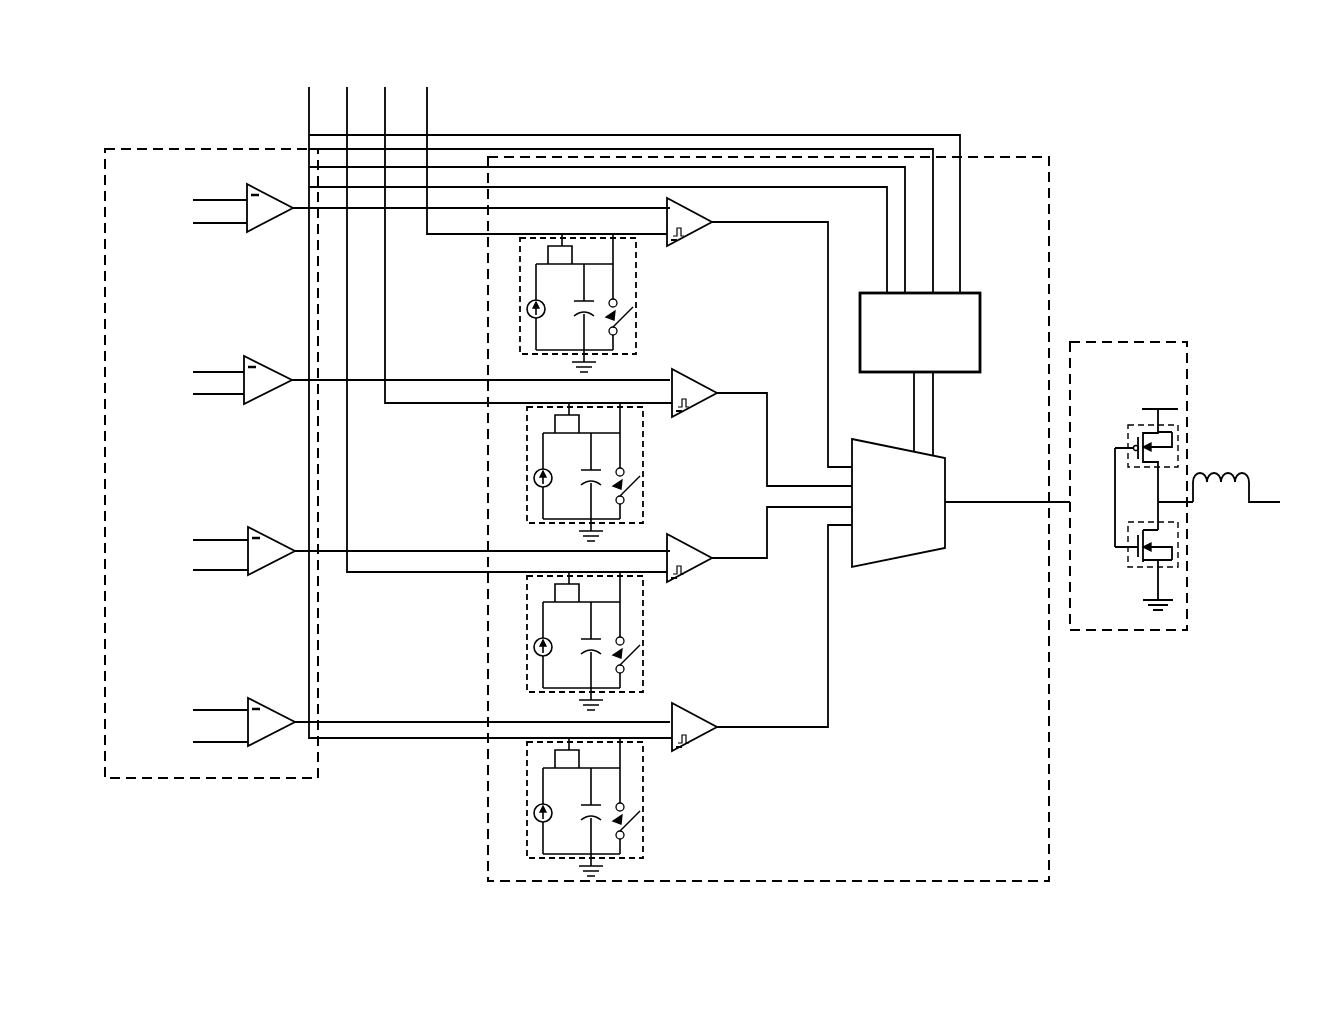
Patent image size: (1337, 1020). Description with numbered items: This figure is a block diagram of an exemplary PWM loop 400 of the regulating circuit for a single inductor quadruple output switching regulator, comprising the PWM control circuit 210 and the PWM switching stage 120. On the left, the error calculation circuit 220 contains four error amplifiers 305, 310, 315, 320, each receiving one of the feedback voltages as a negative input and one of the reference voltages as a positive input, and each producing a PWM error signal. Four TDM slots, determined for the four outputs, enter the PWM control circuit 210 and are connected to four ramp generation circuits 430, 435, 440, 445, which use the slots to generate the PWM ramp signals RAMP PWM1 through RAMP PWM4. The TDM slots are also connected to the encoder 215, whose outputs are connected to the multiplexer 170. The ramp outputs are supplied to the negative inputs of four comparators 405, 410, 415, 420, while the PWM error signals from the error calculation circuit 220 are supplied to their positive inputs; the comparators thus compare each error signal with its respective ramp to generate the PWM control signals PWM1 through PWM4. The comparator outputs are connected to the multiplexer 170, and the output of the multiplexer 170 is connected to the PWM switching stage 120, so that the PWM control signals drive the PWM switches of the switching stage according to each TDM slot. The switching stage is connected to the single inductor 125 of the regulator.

The PWM loop 400 is at (1055, 139).
The error calculation circuit 220 is at (175, 778).
The error amplifier 305 is at (257, 234).
The error amplifier 310 is at (255, 404).
The error amplifier 315 is at (258, 574).
The error amplifier 320 is at (258, 746).
The PWM control circuit 210 is at (954, 881).
The encoder 215 is at (981, 303).
The multiplexer 170 is at (925, 553).
The comparator 405 is at (697, 242).
The comparator 410 is at (698, 415).
The comparator 415 is at (690, 580).
The comparator 420 is at (692, 748).
The ramp generation circuit 430 is at (608, 295).
The ramp generation circuit 435 is at (615, 464).
The ramp generation circuit 440 is at (615, 633).
The ramp generation circuit 445 is at (615, 799).
The PWM switching stage 120 is at (1137, 630).
The inductor 125 is at (1238, 471).